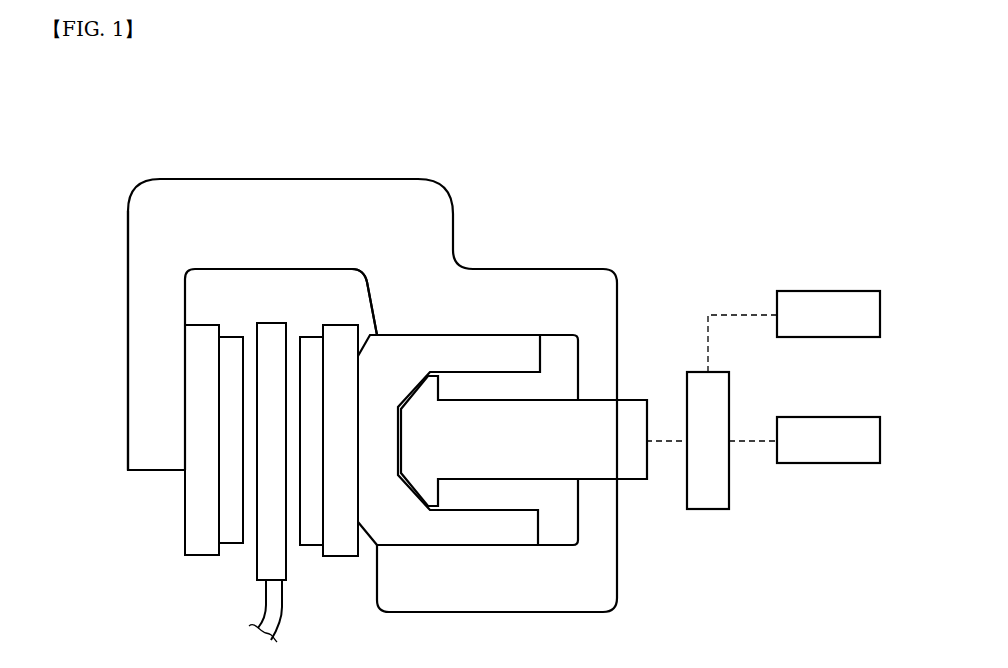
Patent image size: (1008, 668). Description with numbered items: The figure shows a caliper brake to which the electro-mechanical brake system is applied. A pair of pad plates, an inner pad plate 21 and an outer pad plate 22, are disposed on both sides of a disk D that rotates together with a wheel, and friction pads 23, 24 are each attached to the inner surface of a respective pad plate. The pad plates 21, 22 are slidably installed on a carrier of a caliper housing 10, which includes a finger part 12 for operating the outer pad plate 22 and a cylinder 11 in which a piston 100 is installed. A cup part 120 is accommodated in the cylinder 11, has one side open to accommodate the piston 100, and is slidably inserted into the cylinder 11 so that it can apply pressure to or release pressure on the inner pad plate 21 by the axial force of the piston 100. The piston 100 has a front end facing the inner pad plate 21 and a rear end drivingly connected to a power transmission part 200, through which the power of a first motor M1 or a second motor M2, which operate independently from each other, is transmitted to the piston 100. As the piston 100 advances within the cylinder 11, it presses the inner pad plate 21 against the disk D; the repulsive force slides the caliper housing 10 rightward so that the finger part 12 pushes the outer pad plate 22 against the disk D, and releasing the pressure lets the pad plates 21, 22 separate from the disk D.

The caliper housing 10 is at (327, 196).
The cylinder 11 is at (485, 283).
The finger part 12 is at (140, 411).
The outer pad plate 22 is at (195, 510).
The friction pad 24 is at (230, 530).
The disk D is at (262, 566).
The friction pad 23 is at (310, 538).
The inner pad plate 21 is at (343, 548).
The cup part 120 is at (503, 350).
The piston 100 is at (563, 425).
The power transmission part 200 is at (710, 495).
The first motor M1 is at (840, 305).
The second motor M2 is at (840, 449).